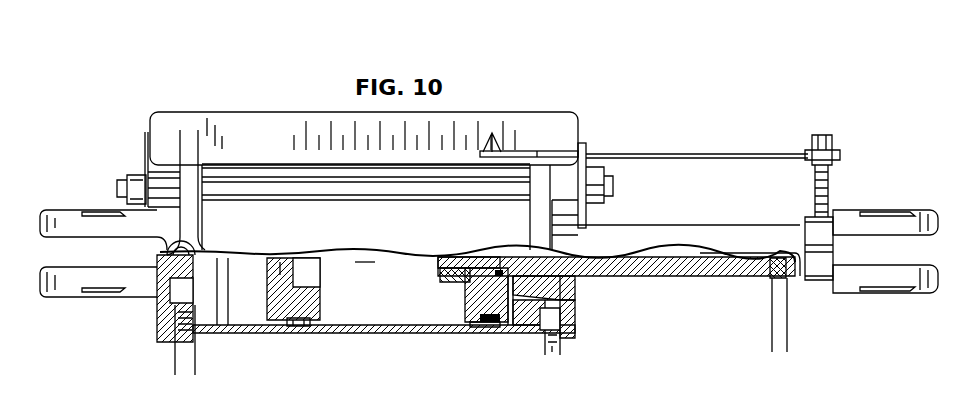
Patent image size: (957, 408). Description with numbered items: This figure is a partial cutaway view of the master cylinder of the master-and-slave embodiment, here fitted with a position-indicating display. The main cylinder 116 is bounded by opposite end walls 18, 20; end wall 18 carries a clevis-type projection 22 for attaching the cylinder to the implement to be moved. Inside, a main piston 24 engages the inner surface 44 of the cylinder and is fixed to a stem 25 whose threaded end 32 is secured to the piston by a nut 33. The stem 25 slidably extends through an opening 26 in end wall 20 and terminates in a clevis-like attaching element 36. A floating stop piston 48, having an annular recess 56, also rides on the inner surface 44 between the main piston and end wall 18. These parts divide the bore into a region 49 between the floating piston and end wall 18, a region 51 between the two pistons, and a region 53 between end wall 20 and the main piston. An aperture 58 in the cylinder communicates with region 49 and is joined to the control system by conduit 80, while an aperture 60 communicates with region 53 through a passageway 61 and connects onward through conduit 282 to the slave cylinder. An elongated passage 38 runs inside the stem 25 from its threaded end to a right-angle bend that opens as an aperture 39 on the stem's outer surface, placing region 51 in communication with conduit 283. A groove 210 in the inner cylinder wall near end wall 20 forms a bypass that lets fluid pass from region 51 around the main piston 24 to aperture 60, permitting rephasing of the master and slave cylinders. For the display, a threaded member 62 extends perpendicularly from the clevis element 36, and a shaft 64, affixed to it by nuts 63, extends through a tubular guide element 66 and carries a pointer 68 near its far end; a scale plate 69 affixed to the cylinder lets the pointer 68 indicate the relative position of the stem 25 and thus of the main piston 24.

The scale plate 69 is at (262, 114).
The pointer 68 is at (497, 138).
The tubular guide element 66 is at (545, 153).
The shaft 64 is at (700, 154).
The end wall 20 is at (527, 212).
The end wall 18 is at (190, 165).
The main cylinder 116 is at (283, 165).
The clevis-type projection 22 is at (58, 208).
The aperture 58 is at (162, 326).
The conduit 80 is at (173, 370).
The inner surface 44 is at (390, 325).
The region 49 is at (246, 262).
The annular recess 56 is at (318, 262).
The floating stop piston 48 is at (278, 260).
The region 51 is at (364, 258).
The opening 26 is at (545, 265).
The elongated passage 38 is at (720, 250).
The stem 25 is at (672, 225).
The aperture 39 is at (768, 272).
The conduit 283 is at (771, 334).
The threaded end 32 is at (440, 263).
The nut 33 is at (452, 276).
The main piston 24 is at (465, 298).
The groove 210 is at (494, 335).
The region 53 is at (513, 272).
The passageway 61 is at (575, 300).
The aperture 60 is at (575, 330).
The conduit 282 is at (563, 352).
The threaded member 62 is at (830, 181).
The nuts 63 is at (835, 158).
The clevis-like attaching element 36 is at (906, 210).